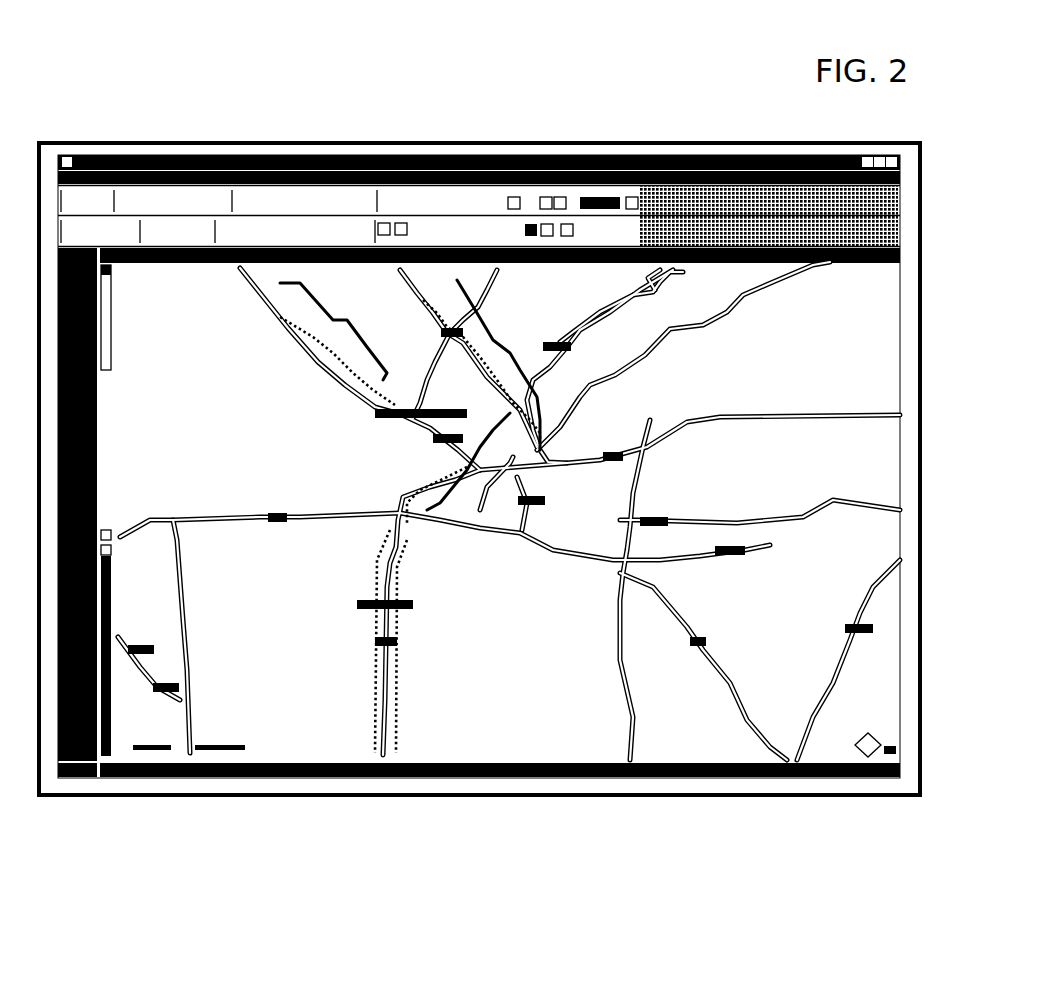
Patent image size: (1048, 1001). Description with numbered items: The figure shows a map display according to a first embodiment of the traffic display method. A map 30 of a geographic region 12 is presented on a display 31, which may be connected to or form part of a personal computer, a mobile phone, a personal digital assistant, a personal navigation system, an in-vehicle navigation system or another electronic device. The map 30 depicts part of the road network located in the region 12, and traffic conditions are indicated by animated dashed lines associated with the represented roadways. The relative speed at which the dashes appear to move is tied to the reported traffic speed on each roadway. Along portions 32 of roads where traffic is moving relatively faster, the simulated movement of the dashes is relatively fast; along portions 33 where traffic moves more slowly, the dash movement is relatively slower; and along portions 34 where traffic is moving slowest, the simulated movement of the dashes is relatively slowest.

The geographic region 12 is at (218, 362).
The map 30 is at (880, 333).
The display 31 is at (621, 132).
The portions of roads where traffic is moving relatively faster 32 is at (357, 304).
The portions of roads where traffic is moving more slowly 33 is at (523, 285).
The portions of roads where traffic is moving slowest 34 is at (523, 503).